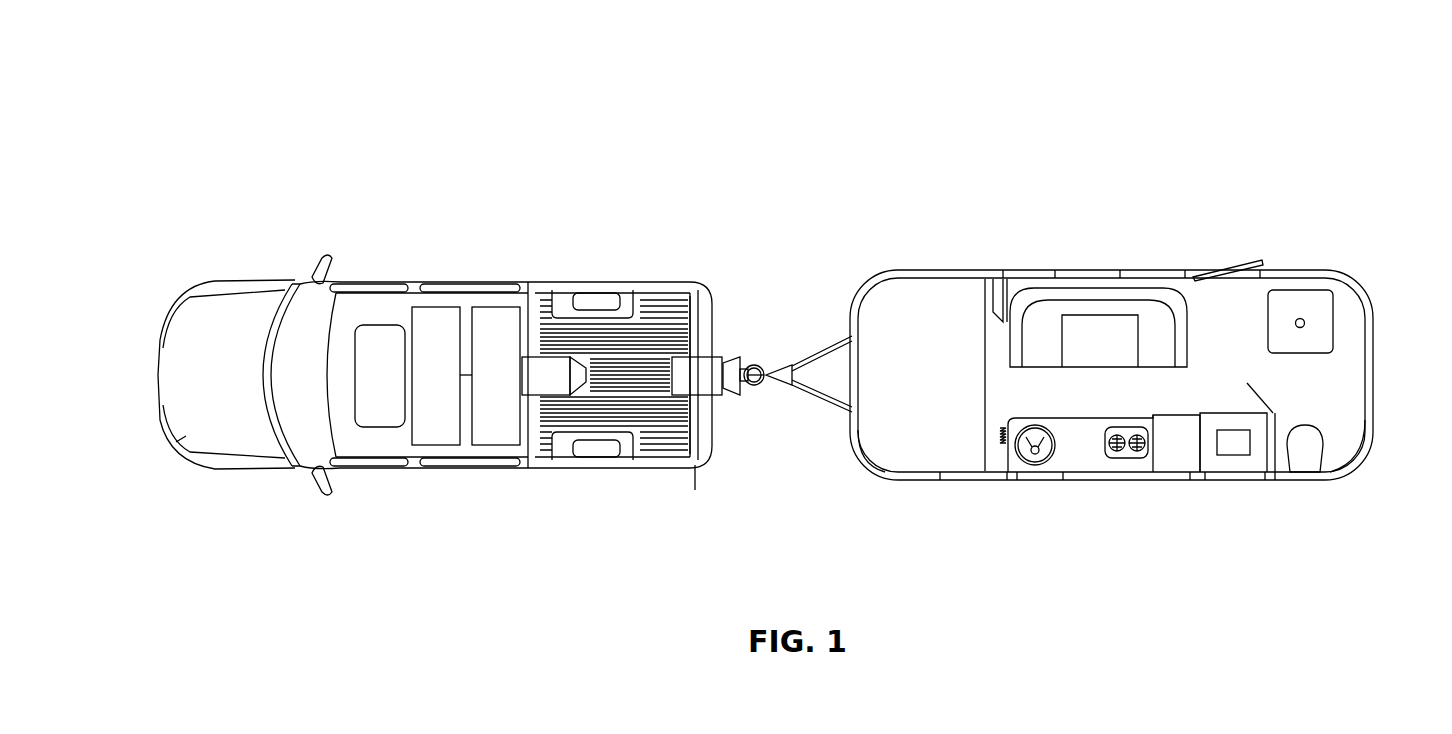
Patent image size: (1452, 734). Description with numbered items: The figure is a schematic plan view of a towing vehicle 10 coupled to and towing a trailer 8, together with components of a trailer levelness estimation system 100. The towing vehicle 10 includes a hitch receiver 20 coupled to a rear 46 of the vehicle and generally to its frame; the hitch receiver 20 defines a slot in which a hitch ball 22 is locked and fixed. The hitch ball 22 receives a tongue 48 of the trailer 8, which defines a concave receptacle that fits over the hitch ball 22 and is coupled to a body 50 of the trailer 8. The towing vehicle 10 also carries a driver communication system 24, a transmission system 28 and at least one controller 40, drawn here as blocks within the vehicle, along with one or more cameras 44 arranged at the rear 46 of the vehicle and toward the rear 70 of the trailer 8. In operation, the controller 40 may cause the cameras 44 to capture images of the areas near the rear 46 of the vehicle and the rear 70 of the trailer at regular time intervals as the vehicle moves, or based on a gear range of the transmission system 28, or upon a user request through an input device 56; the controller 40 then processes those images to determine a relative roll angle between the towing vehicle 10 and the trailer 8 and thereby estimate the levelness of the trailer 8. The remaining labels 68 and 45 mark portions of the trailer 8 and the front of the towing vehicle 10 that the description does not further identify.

The trailer levelness estimation system 100 is at (178, 205).
The towing vehicle 10 is at (460, 200).
The trailer 8 is at (942, 165).
The rear of the vehicle 46 is at (688, 285).
The camera 44 is at (723, 352).
The hitch ball 22 is at (752, 363).
The tongue 48 is at (770, 373).
The hitch receiver 20 is at (743, 390).
The input device 56 is at (838, 350).
The trailer front end 68 is at (863, 455).
The rear of the trailer 70 is at (1365, 450).
The body of the trailer 50 is at (1186, 270).
The transmission system 28 is at (1230, 457).
The controller 40 is at (452, 388).
The driver communication system 24 is at (512, 388).
The front sensor 45 is at (185, 436).